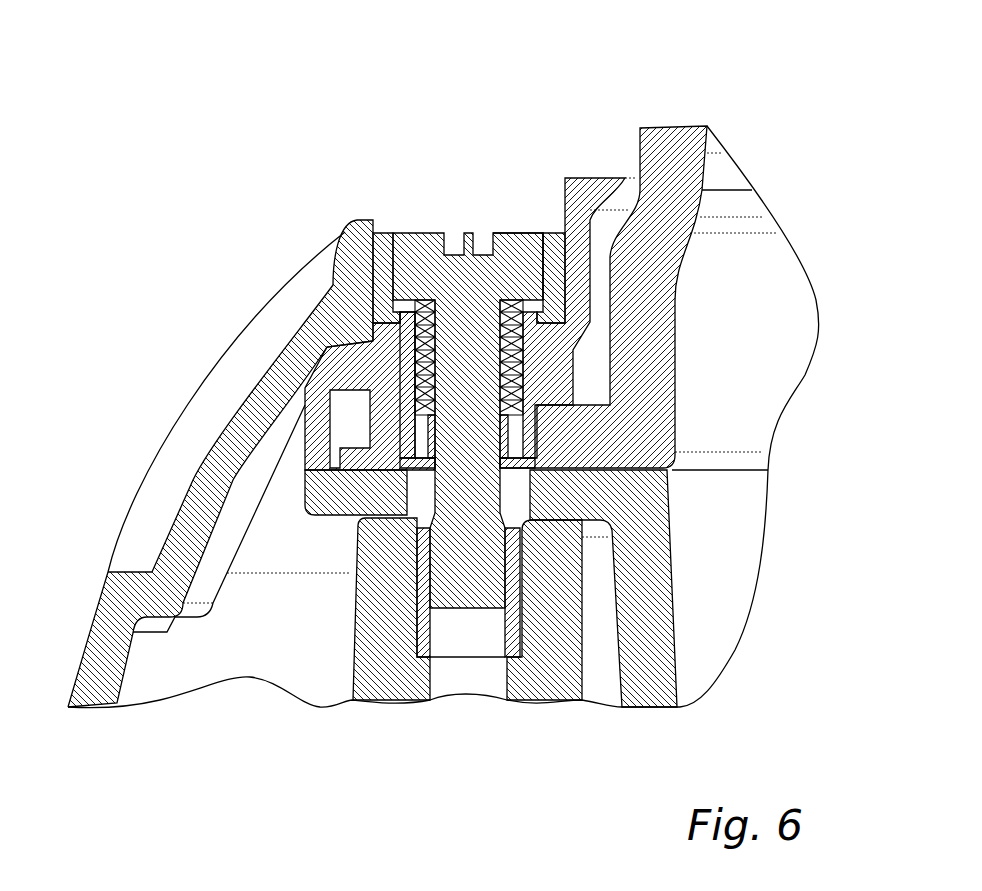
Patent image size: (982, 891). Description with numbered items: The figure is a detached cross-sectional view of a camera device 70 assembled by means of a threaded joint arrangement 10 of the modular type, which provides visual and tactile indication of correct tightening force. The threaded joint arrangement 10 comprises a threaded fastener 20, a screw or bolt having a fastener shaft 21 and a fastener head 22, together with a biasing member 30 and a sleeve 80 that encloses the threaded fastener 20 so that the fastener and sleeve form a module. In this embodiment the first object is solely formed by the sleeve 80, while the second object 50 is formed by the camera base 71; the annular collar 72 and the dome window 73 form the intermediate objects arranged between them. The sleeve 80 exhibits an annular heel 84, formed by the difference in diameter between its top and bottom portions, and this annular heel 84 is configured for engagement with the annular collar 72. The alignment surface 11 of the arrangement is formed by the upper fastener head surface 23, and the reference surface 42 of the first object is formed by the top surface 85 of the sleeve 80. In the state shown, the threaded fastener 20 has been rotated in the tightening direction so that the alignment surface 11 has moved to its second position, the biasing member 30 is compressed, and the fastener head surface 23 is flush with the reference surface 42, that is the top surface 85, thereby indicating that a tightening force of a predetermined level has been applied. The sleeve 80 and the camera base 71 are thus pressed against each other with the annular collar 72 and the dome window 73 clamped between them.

The threaded joint arrangement 10 is at (477, 125).
The alignment surface 11 is at (457, 445).
The threaded fastener 20 is at (495, 197).
The fastener shaft 21 is at (430, 233).
The fastener head 22 is at (517, 237).
The upper fastener head surface 23 is at (457, 445).
The biasing member 30 is at (520, 367).
The reference surface 42 is at (220, 416).
The second object 50 is at (345, 702).
The camera device 70 is at (240, 240).
The camera base 71 is at (372, 662).
The annular collar 72 is at (100, 613).
The dome window 73 is at (680, 165).
The sleeve 80 is at (555, 285).
The annular heel 84 is at (385, 325).
The top surface 85 is at (373, 230).